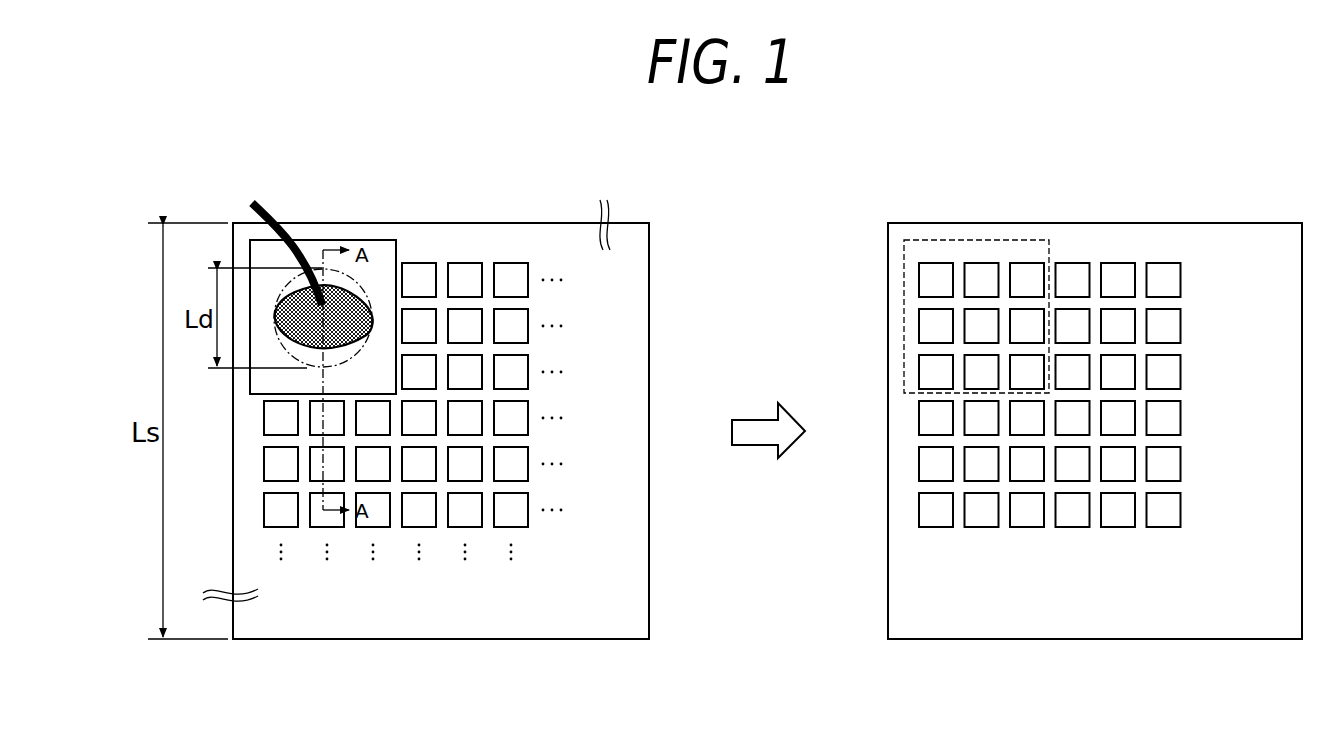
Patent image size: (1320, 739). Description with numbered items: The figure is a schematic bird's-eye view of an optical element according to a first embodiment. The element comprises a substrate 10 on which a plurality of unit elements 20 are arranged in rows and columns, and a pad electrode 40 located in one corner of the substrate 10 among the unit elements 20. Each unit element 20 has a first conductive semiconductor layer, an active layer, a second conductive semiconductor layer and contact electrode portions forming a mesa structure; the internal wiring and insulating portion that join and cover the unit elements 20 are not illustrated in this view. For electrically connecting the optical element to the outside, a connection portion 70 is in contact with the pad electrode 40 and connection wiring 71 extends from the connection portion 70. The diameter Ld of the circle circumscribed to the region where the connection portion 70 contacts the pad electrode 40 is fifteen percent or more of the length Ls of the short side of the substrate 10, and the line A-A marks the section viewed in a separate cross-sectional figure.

The substrate 10 is at (327, 640).
The unit element 20 is at (465, 266).
The pad electrode 40 is at (321, 240).
The connection portion 70 is at (357, 318).
The connection wiring 71 is at (278, 212).